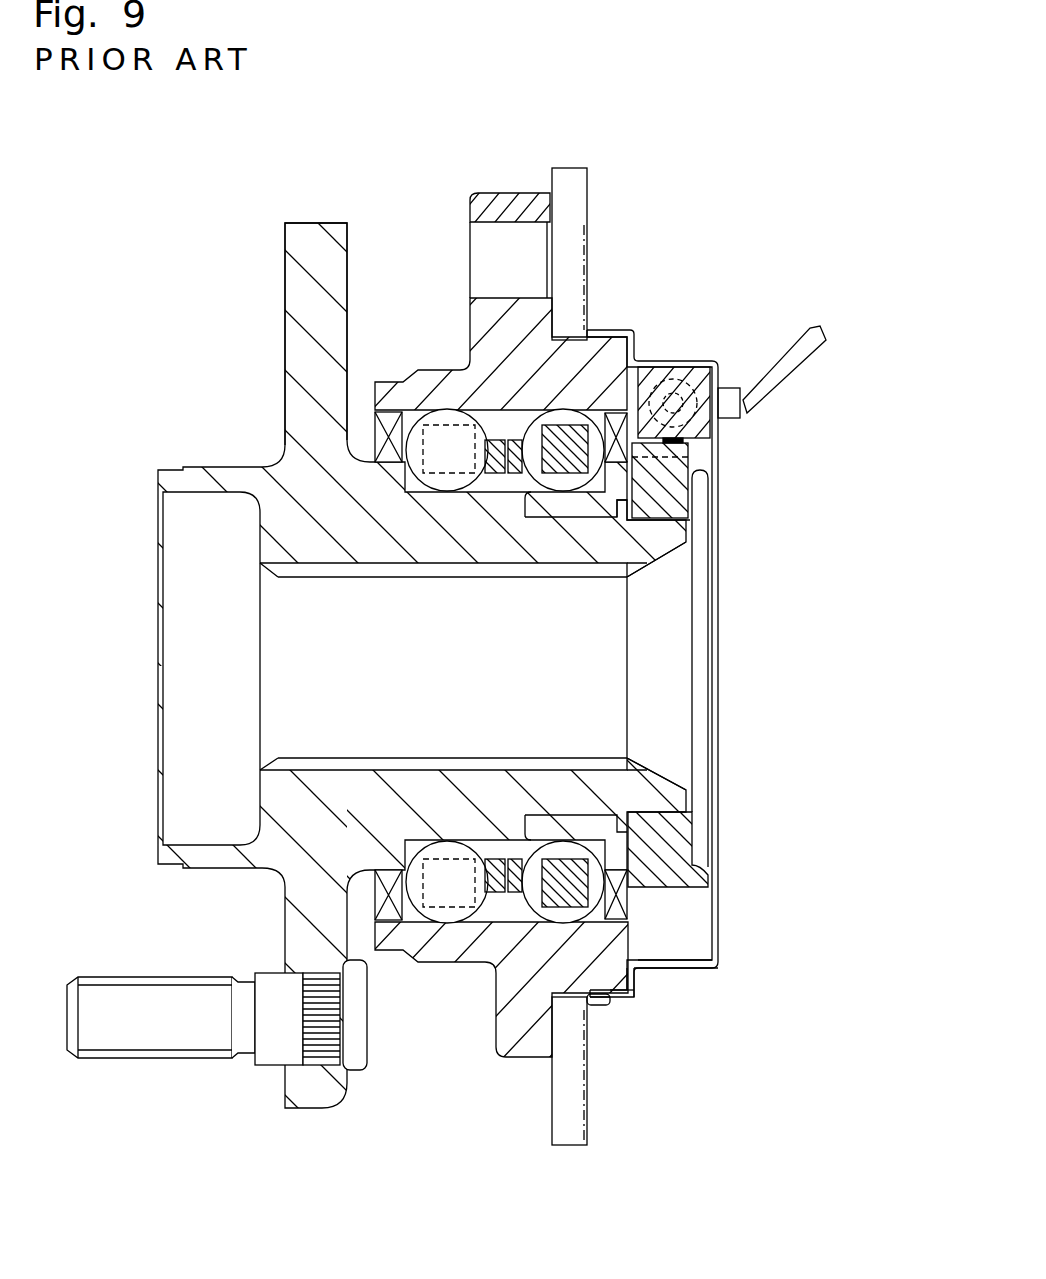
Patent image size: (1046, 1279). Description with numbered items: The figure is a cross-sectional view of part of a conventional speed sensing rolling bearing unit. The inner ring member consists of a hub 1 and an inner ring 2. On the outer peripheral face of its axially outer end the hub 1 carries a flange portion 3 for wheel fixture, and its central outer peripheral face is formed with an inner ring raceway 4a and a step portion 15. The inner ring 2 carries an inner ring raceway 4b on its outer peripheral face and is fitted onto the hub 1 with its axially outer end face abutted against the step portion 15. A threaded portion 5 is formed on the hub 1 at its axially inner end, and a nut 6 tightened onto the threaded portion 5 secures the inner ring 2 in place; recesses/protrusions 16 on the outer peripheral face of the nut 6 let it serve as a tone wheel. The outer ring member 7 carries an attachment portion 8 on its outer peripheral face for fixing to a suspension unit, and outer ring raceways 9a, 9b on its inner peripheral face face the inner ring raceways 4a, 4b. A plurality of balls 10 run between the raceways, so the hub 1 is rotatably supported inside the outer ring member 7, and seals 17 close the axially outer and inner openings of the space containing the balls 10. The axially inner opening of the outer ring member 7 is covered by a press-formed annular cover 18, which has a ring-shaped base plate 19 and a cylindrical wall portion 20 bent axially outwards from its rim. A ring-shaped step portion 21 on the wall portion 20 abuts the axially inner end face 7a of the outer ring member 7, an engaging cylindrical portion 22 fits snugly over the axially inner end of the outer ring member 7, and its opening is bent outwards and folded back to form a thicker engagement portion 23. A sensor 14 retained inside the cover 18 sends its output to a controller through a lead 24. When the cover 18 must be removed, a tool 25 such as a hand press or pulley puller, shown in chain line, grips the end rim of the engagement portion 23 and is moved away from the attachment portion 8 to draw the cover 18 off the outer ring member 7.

The hub 1 is at (272, 480).
The inner ring 2 is at (615, 838).
The flange portion 3 is at (285, 262).
The inner ring raceway 4a is at (437, 846).
The inner ring raceway 4b is at (645, 768).
The threaded portion 5 is at (672, 512).
The nut 6 is at (672, 487).
The outer ring member 7 is at (533, 1028).
The axially inner end face 7a is at (634, 982).
The attachment portion 8 is at (488, 197).
The outer ring raceway 9a is at (462, 922).
The outer ring raceway 9b is at (562, 408).
The balls 10 is at (445, 410).
The sensor 14 is at (712, 425).
The step portion 15 is at (456, 428).
The recesses/protrusions 16 is at (708, 895).
The seals 17 is at (387, 418).
The cover 18 is at (692, 367).
The base plate 19 is at (722, 632).
The cylindrical wall portion 20 is at (702, 965).
The step portion 21 is at (633, 990).
The engaging cylindrical portion 22 is at (618, 998).
The engagement portion 23 is at (593, 1003).
The lead 24 is at (790, 362).
The tool 25 is at (590, 192).